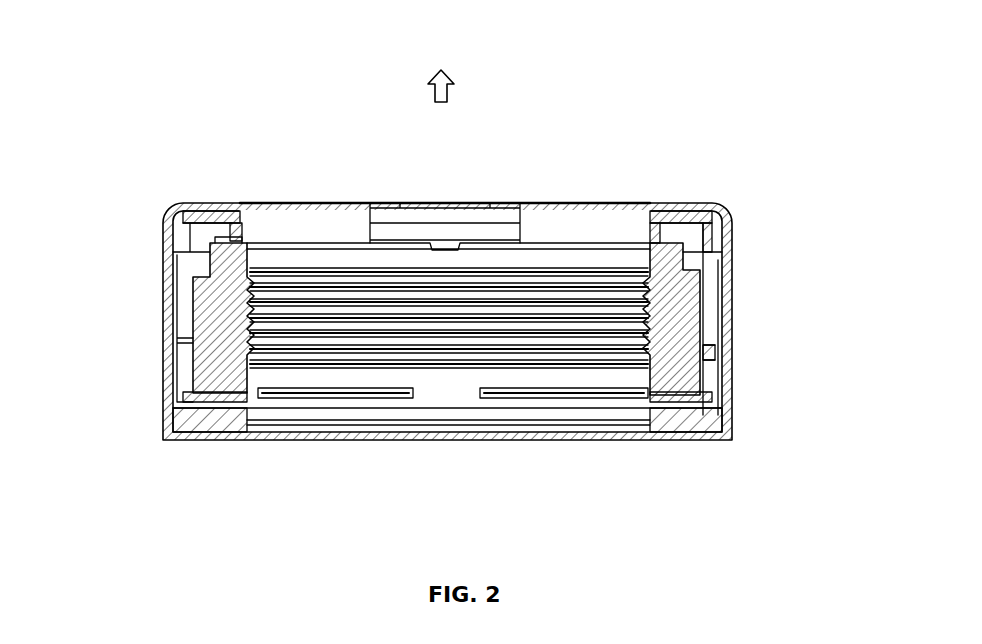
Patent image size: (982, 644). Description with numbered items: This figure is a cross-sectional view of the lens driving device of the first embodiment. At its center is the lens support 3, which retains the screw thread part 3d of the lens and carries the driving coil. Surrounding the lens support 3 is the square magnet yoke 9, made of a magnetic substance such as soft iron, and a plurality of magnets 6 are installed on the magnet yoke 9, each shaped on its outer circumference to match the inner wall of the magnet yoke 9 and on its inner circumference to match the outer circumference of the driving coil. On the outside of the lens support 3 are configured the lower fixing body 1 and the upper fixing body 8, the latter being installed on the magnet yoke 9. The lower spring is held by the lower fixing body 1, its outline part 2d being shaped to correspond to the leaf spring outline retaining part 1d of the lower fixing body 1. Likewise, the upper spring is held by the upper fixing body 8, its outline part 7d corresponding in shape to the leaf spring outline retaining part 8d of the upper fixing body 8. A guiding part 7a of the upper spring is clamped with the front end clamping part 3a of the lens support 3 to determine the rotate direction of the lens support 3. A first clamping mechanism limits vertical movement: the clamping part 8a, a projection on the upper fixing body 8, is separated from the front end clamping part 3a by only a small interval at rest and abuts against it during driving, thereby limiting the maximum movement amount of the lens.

The lower fixing body 1 is at (690, 430).
The leaf spring outline retaining part 1d is at (730, 422).
The outline part 2d is at (707, 392).
The lens support 3 is at (713, 370).
The front end clamping part 3a is at (247, 238).
The screw thread part 3d is at (258, 365).
The magnet 6 is at (705, 318).
The guiding part 7a is at (727, 226).
The outline part 7d is at (720, 263).
The upper fixing body 8 is at (690, 200).
The clamping part 8a is at (235, 203).
The leaf spring outline retaining part 8d is at (712, 242).
The magnet yoke 9 is at (187, 203).